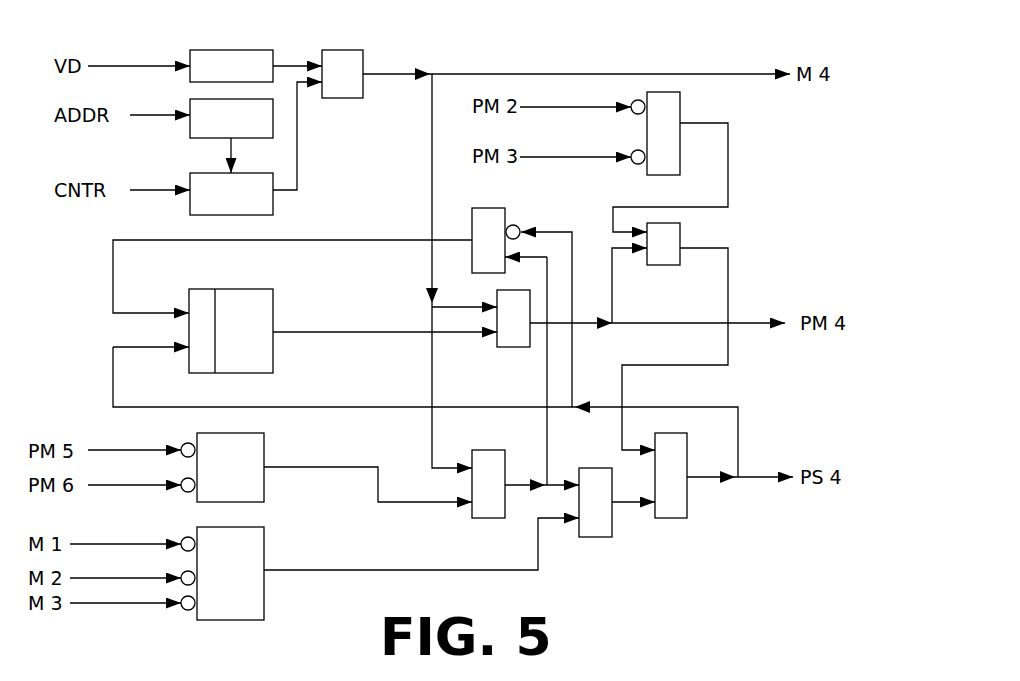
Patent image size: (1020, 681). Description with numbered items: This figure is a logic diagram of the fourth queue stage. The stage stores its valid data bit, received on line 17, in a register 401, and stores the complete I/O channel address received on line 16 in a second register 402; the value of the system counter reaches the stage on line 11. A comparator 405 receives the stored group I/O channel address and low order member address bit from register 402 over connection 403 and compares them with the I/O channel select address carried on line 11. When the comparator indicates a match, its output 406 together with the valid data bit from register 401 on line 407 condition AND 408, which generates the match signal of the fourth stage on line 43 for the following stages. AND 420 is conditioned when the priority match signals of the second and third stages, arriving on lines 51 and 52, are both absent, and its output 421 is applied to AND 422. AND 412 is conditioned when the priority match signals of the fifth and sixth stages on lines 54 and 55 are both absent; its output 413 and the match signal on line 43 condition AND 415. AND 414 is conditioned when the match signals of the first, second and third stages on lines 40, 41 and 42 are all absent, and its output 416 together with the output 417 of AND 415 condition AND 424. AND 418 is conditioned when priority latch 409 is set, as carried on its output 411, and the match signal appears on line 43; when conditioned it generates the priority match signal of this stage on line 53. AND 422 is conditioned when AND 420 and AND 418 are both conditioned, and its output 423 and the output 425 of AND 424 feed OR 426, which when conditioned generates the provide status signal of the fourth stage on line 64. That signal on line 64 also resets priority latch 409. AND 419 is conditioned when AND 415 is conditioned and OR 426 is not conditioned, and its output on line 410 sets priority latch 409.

The line 17 is at (170, 62).
The register 401 is at (198, 58).
The register 402 is at (206, 115).
The line 16 is at (175, 118).
The line 11 is at (170, 188).
The register output line to comparator 403 is at (228, 165).
The comparator 405 is at (240, 207).
The comparator output line 406 is at (297, 155).
The register output line 407 is at (290, 62).
The AND 408 is at (345, 58).
The line 43 is at (725, 74).
The line 51 is at (590, 105).
The line 52 is at (596, 155).
The AND 420 is at (662, 160).
The AND gate output line 421 is at (730, 145).
The AND 422 is at (670, 232).
The line 53 is at (745, 323).
The AND gate output line 423 is at (697, 365).
The AND 419 is at (480, 225).
The set input line of latch 410 is at (218, 240).
The priority latch 409 is at (250, 305).
The latch output line 411 is at (378, 335).
The AND 418 is at (508, 330).
The line 54 is at (128, 448).
The line 55 is at (147, 485).
The AND 412 is at (247, 458).
The AND gate output line 413 is at (365, 478).
The AND gate output line 417 is at (545, 440).
The AND 415 is at (493, 505).
The AND gate output line 416 is at (400, 572).
The AND 414 is at (247, 560).
The line 40 is at (130, 543).
The line 41 is at (135, 577).
The line 42 is at (147, 603).
The AND 424 is at (595, 527).
The AND gate output line 425 is at (622, 505).
The OR 426 is at (672, 502).
The line 64 is at (753, 477).